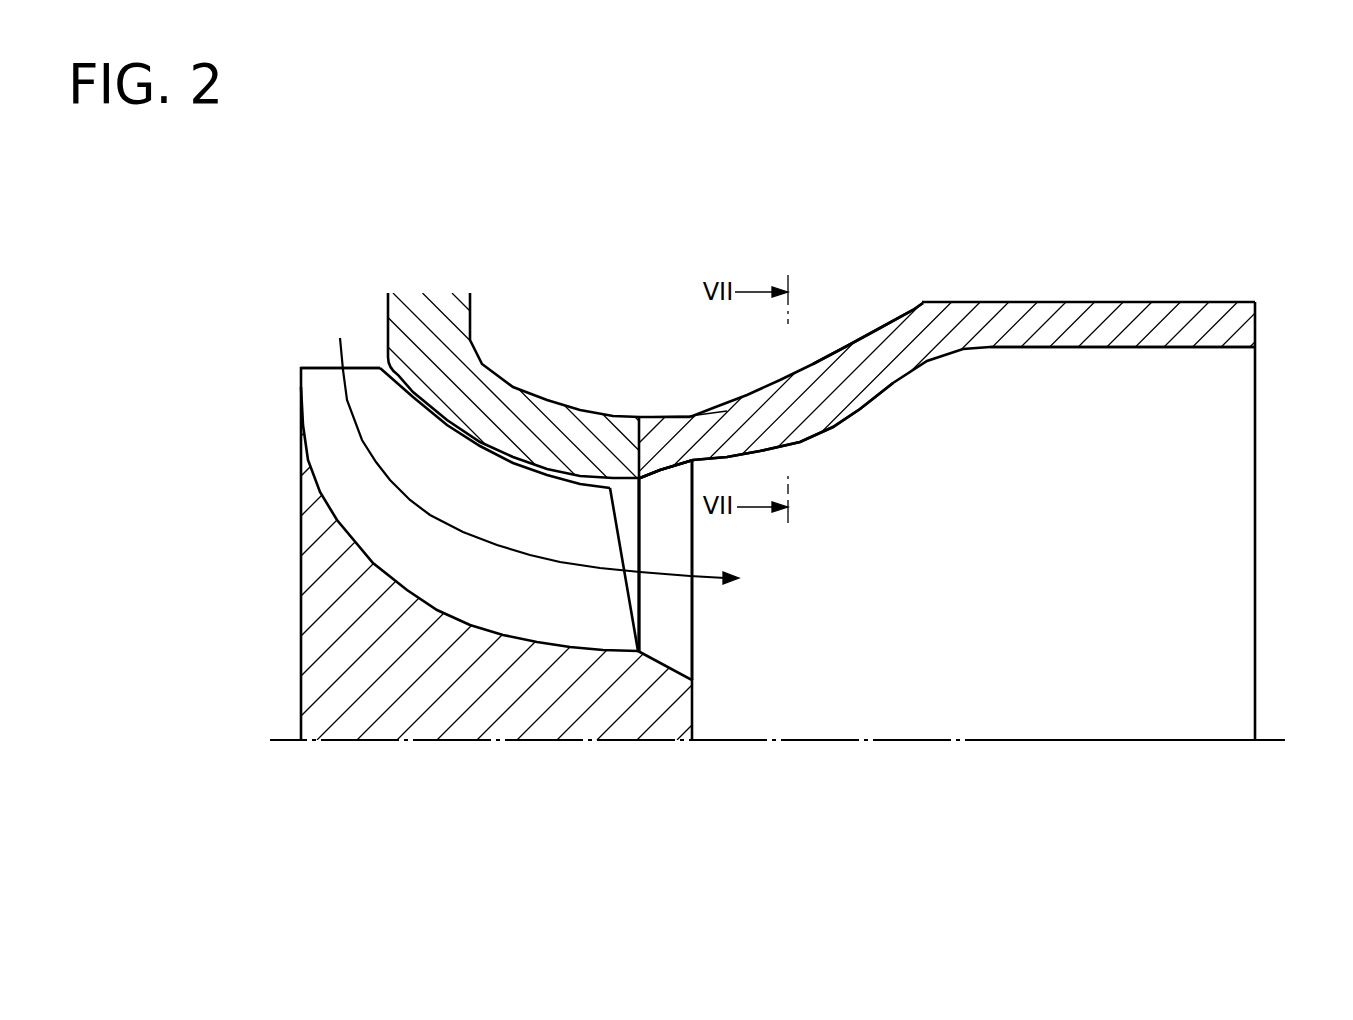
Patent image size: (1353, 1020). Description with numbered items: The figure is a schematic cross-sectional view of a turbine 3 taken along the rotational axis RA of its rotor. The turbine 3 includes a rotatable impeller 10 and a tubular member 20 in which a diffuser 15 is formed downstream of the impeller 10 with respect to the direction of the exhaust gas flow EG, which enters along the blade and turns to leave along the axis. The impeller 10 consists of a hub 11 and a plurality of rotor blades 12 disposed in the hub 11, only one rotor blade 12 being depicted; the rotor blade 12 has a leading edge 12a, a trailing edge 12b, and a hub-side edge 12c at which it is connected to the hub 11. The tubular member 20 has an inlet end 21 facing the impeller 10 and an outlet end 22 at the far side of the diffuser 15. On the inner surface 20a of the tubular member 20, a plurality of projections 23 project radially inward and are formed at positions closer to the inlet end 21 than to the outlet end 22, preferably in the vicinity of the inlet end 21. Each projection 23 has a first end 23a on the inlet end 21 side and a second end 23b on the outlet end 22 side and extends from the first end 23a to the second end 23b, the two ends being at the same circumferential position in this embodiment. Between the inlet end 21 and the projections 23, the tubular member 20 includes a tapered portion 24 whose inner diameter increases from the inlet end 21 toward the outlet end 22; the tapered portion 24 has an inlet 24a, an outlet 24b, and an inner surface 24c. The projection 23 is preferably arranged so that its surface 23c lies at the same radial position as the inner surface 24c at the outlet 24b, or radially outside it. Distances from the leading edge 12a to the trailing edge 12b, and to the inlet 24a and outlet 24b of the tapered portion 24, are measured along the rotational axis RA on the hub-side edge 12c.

The turbine 3 is at (540, 204).
The impeller 10 is at (706, 708).
The hub 11 is at (381, 728).
The rotor blade 12 is at (465, 488).
The leading edge 12a is at (312, 368).
The trailing edge 12b is at (634, 607).
The hub-side edge 12c is at (482, 628).
The diffuser 15 is at (1003, 531).
The tubular member 20 is at (1040, 302).
The inner surface 20a is at (1100, 347).
The inlet end 21 is at (639, 503).
The outlet end 22 is at (1257, 537).
The projection 23 is at (800, 443).
The first end 23a is at (692, 461).
The second end 23b is at (900, 380).
The surface of the projection 23c is at (828, 426).
The tapered portion 24 is at (672, 544).
The inlet of the tapered portion 24a is at (637, 540).
The outlet of the tapered portion 24b is at (693, 626).
The inner surface of the tapered portion 24c is at (692, 463).
The exhaust gas flow EG is at (435, 518).
The rotational axis RA is at (800, 740).